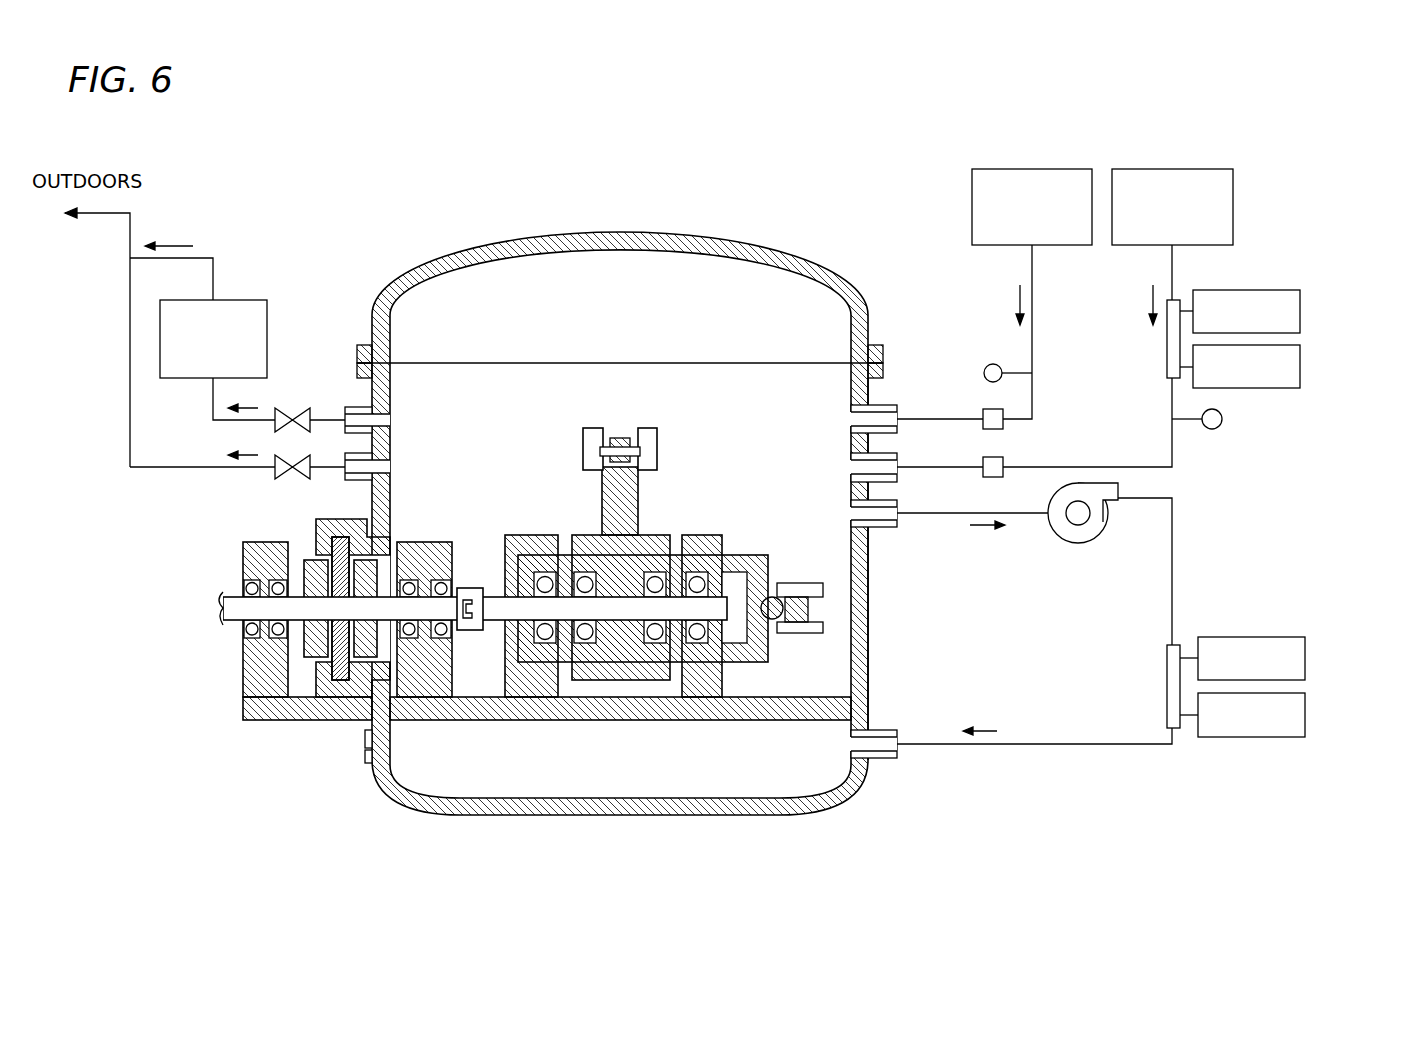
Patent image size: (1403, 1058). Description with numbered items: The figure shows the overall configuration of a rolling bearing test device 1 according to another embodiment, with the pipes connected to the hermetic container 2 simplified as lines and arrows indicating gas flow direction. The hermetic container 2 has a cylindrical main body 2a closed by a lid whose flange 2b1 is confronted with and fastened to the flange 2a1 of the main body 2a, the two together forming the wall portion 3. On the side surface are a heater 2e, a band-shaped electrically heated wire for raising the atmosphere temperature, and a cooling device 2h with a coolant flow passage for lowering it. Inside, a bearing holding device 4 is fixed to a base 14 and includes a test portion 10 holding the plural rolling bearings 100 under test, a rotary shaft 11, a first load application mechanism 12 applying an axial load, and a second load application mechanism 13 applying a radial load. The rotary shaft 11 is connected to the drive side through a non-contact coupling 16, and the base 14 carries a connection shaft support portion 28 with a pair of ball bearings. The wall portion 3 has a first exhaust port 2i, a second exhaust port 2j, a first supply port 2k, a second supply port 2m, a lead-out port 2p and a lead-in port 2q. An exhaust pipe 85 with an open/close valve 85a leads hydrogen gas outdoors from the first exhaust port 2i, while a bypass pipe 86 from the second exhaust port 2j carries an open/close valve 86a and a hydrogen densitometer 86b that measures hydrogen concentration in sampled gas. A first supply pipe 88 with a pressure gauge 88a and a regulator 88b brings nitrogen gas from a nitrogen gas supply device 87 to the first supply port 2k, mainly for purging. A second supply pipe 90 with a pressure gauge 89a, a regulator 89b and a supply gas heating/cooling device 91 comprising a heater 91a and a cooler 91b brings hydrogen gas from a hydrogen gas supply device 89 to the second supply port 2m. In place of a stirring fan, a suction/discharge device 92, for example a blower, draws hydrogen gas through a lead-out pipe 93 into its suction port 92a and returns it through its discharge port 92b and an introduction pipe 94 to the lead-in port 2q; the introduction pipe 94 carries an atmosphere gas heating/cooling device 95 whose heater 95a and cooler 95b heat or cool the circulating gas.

The rolling bearing test device 1 is at (795, 228).
The hermetic container 2 is at (868, 291).
The main body 2a is at (868, 555).
The flange 2a1 is at (883, 370).
The flange 2b1 is at (883, 352).
The heater 2e is at (366, 763).
The cooling device 2h is at (365, 740).
The first exhaust port 2i is at (372, 467).
The second exhaust port 2j is at (372, 420).
The first supply port 2k is at (851, 419).
The second supply port 2m is at (851, 467).
The lead-out port 2p is at (851, 513).
The lead-in port 2q is at (851, 744).
The wall portion 3 is at (372, 500).
The bearing holding device 4 is at (538, 404).
The test portion 10 is at (692, 519).
The rotary shaft 11 is at (492, 610).
The first load application mechanism 12 is at (810, 608).
The second load application mechanism 13 is at (657, 440).
The base 14 is at (818, 697).
The non-contact coupling 16 is at (308, 683).
The connection shaft support portion 28 is at (428, 542).
The exhaust pipe 85 is at (130, 395).
The open/close valve 85a is at (292, 479).
The bypass pipe 86 is at (213, 395).
The open/close valve 86a is at (294, 408).
The hydrogen densitometer 86b is at (248, 300).
The nitrogen gas supply device 87 is at (1032, 169).
The first supply pipe 88 is at (1032, 271).
The pressure gauge 88a is at (988, 367).
The regulator 88b is at (988, 409).
The hydrogen gas supply device 89 is at (1172, 169).
The pressure gauge 89a is at (1222, 419).
The regulator 89b is at (993, 457).
The second supply pipe 90 is at (1172, 258).
The supply gas heating/cooling device 91 is at (1353, 290).
The heater 91a is at (1300, 311).
The cooler 91b is at (1300, 367).
The suction/discharge device 92 is at (1098, 538).
The suction port 92a is at (1078, 520).
The discharge port 92b is at (1118, 492).
The lead-out pipe 93 is at (1033, 515).
The introduction pipe 94 is at (1033, 745).
The atmosphere gas heating/cooling device 95 is at (1357, 637).
The heater 95a is at (1305, 658).
The cooler 95b is at (1305, 715).
The rolling bearings 100 is at (585, 645).